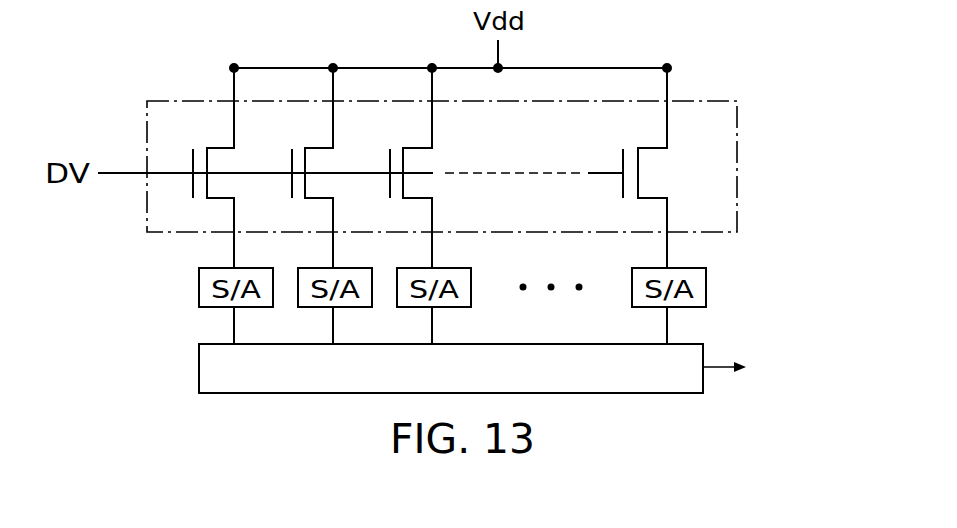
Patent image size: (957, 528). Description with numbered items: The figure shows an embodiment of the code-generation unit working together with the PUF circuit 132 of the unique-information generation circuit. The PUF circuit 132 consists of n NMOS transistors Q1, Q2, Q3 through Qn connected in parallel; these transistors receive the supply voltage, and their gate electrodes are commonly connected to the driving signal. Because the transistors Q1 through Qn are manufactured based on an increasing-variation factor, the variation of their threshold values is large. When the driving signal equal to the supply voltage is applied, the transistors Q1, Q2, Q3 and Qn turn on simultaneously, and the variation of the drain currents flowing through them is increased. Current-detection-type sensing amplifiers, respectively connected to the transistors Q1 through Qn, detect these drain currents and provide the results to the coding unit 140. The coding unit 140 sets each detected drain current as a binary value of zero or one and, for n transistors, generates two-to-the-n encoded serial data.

The PUF circuit 132 is at (463, 206).
The coding unit 140 is at (199, 368).
The NMOS transistor Q1 is at (222, 147).
The NMOS transistor Q2 is at (321, 147).
The NMOS transistor Q3 is at (419, 147).
The NMOS transistor Qn is at (653, 147).